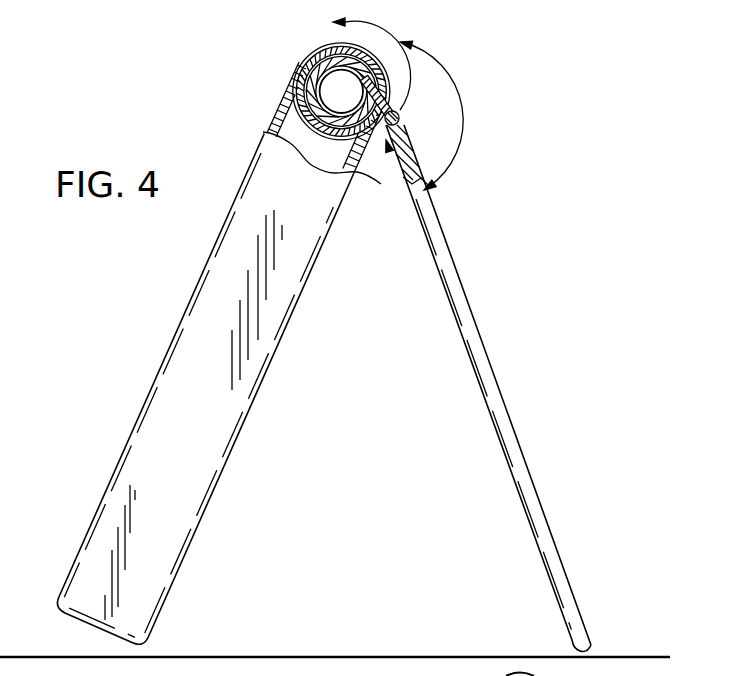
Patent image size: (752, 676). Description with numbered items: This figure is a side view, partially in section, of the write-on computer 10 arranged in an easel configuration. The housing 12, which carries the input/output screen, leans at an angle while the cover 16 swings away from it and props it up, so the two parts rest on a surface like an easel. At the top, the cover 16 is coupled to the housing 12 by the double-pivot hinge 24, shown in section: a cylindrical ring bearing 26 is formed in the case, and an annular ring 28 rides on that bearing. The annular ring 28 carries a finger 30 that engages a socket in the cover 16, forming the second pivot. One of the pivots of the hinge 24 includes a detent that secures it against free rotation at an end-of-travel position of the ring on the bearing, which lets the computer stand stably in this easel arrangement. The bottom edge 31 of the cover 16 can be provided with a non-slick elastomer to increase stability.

The write-on computer 10 is at (520, 262).
The housing 12 is at (203, 439).
The cover 16 is at (500, 403).
The double-pivot hinge 24 is at (424, 71).
The cylindrical ring bearing 26 is at (327, 57).
The annular ring 28 is at (302, 60).
The finger 30 is at (400, 112).
The bottom edge 31 is at (603, 646).